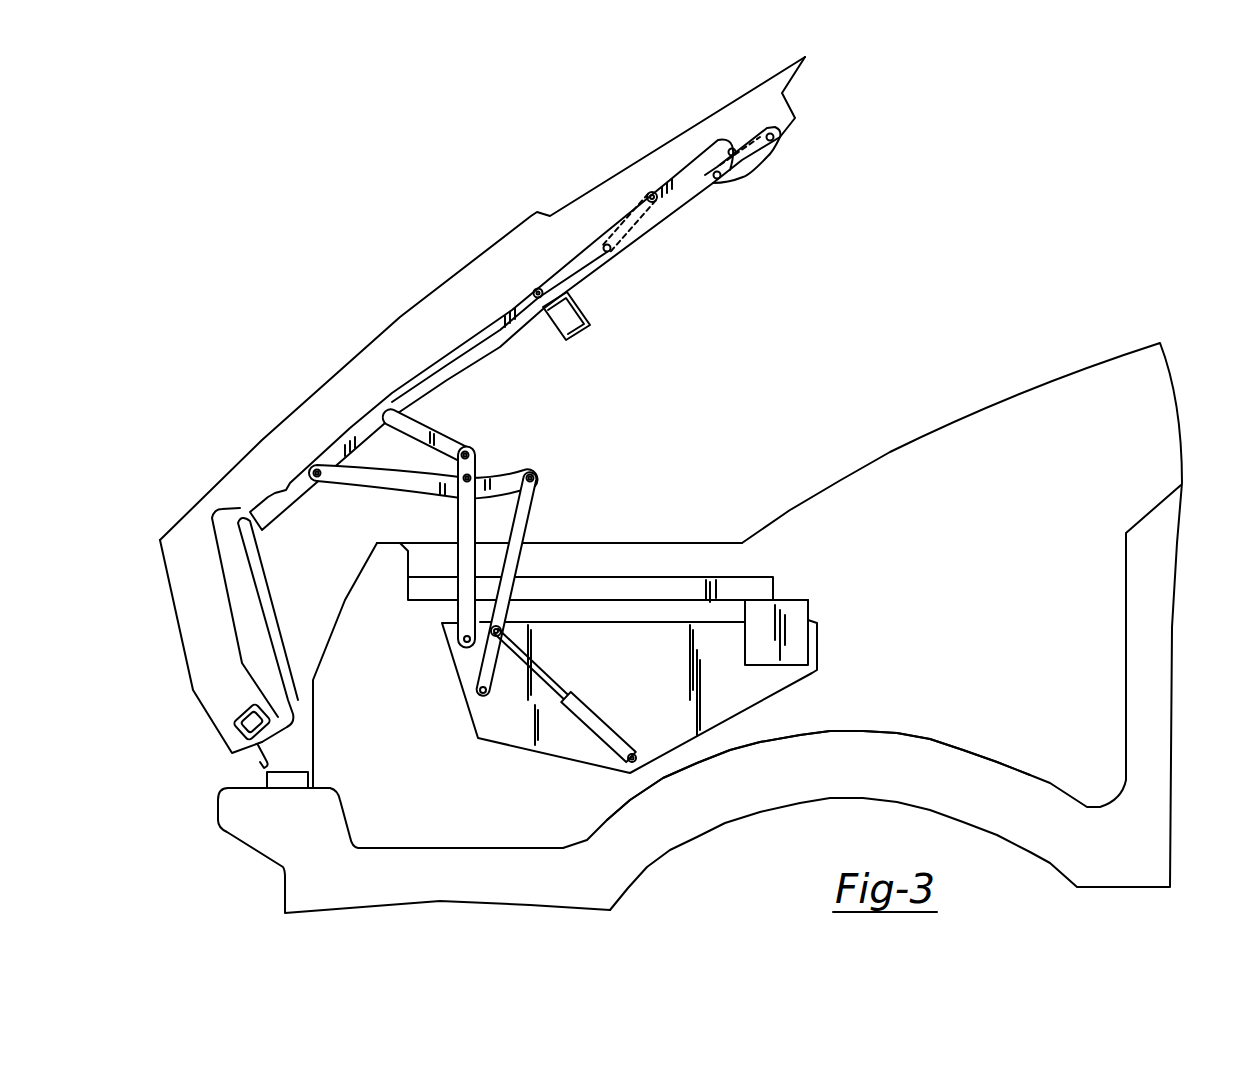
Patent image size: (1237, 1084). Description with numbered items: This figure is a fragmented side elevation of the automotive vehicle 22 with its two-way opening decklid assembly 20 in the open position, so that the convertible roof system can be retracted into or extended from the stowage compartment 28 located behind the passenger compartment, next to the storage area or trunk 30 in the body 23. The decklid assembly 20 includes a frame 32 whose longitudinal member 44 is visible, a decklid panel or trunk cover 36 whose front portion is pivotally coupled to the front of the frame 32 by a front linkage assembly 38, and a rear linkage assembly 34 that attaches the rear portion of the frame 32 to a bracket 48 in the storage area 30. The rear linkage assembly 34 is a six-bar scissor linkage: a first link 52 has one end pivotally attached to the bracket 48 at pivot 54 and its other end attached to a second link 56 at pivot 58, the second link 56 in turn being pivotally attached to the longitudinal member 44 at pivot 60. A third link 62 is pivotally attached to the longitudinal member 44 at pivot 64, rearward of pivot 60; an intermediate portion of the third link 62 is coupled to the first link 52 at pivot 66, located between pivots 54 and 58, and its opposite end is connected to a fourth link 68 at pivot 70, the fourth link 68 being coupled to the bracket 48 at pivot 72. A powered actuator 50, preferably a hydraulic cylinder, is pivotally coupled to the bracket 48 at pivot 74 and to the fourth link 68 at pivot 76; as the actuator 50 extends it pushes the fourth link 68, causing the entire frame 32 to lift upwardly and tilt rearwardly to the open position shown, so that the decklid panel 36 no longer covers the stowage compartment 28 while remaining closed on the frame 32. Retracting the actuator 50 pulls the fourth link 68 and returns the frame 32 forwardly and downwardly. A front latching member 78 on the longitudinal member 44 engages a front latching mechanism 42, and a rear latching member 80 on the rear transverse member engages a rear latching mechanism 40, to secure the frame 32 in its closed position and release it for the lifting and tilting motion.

The decklid assembly 20 is at (897, 286).
The automotive vehicle 22 is at (1157, 596).
The body 23 is at (1158, 660).
The stowage compartment 28 is at (815, 713).
The storage area 30 is at (416, 829).
The frame 32 is at (280, 647).
The rear linkage assembly 34 is at (598, 489).
The decklid panel 36 is at (443, 297).
The front linkage assembly 38 is at (689, 238).
The rear latching mechanism 40 is at (297, 777).
The front latching mechanism 42 is at (805, 615).
The longitudinal member 44 is at (280, 483).
The bracket 48 is at (780, 685).
The powered actuator 50 is at (593, 715).
The first link 52 is at (462, 587).
The pivot 54 is at (460, 648).
The second link 56 is at (427, 430).
The pivot 58 is at (465, 452).
The pivot 60 is at (388, 410).
The third link 62 is at (392, 487).
The pivot 64 is at (320, 480).
The pivot 66 is at (468, 478).
The fourth link 68 is at (530, 520).
The pivot 70 is at (533, 478).
The pivot 72 is at (487, 693).
The pivot 74 is at (635, 758).
The pivot 76 is at (500, 630).
The front latching member 78 is at (590, 319).
The rear latching member 80 is at (257, 763).